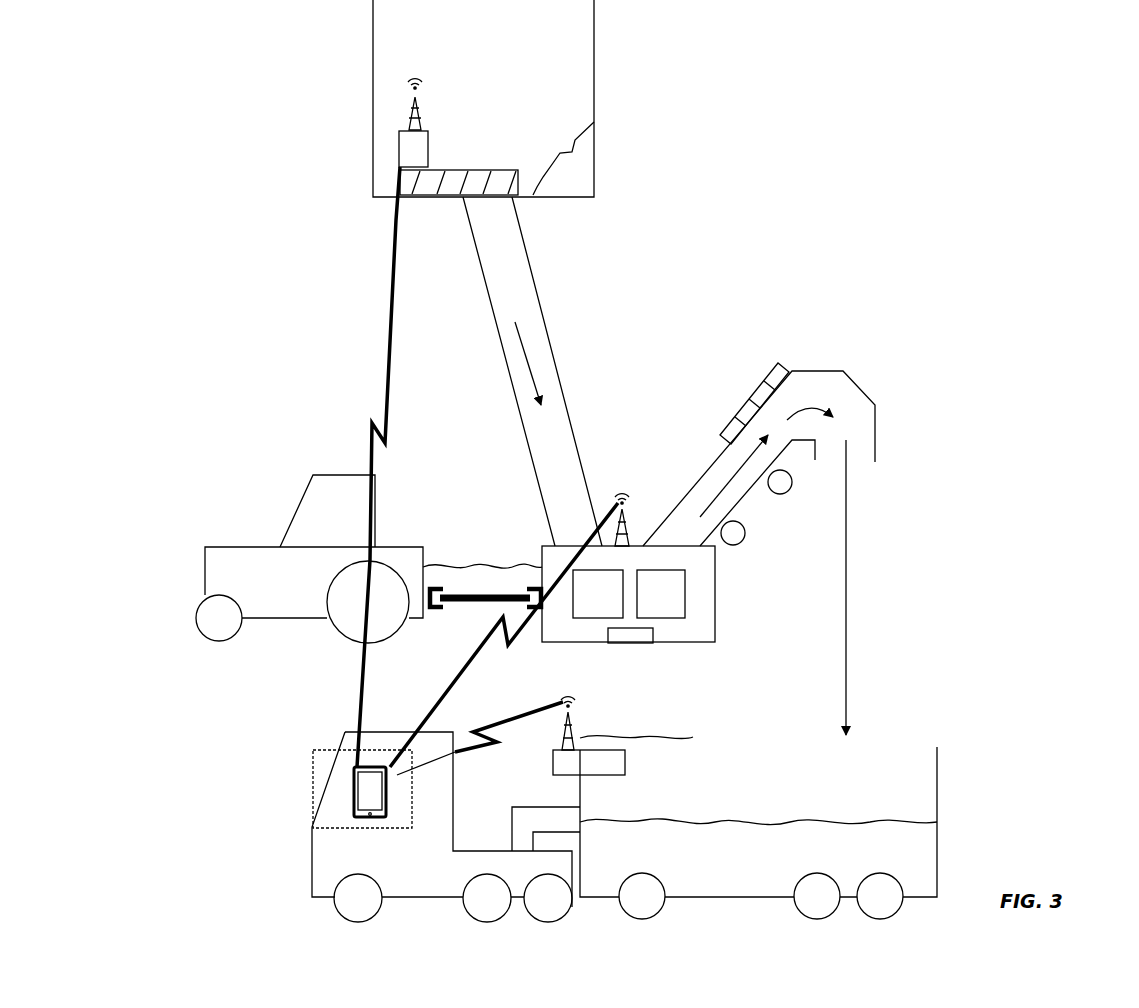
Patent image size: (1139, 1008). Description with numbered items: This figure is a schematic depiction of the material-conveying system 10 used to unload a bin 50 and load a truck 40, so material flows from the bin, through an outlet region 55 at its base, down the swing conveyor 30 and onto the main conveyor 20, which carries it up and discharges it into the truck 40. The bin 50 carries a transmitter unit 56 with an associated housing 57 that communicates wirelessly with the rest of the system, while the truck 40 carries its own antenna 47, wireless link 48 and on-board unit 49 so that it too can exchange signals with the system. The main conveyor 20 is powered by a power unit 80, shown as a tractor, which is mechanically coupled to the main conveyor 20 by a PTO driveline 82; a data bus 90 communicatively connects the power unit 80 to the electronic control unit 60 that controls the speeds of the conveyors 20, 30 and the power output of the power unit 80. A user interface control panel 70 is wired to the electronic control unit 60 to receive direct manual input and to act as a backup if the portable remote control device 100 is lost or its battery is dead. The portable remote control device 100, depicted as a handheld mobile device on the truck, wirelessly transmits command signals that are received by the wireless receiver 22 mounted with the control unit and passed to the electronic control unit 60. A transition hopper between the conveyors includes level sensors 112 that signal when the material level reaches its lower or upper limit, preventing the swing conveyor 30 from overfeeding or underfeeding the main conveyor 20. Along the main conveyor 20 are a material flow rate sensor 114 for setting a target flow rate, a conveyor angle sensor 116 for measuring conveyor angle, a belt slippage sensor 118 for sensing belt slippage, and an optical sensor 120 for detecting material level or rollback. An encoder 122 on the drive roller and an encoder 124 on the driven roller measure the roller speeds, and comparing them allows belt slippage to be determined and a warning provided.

The material-conveying system 10 is at (892, 262).
The main conveyor 20 is at (710, 465).
The wireless receiver 22 is at (626, 497).
The swing conveyor 30 is at (543, 311).
The truck 40 is at (937, 758).
The truck antenna 47 is at (575, 727).
The truck communication link 48 is at (693, 737).
The truck controller 49 is at (589, 763).
The bin 50 is at (594, 47).
The bin outlet 55 is at (432, 182).
The bin antenna 56 is at (405, 100).
The bin sensor unit 57 is at (398, 150).
The electronic control unit 60 is at (598, 594).
The user interface control panel 70 is at (661, 594).
The power unit 80 is at (313, 475).
The PTO driveline 82 is at (470, 607).
The data bus 90 is at (502, 568).
The portable remote control device 100 is at (353, 795).
The level sensors 112 is at (653, 636).
The material flow rate sensor 114 is at (727, 422).
The conveyor angle sensor 116 is at (748, 400).
The belt slippage sensor 118 is at (755, 385).
The optical sensor 120 is at (768, 378).
The encoder on the drive roller 122 is at (745, 537).
The encoder on the driven roller 124 is at (792, 483).